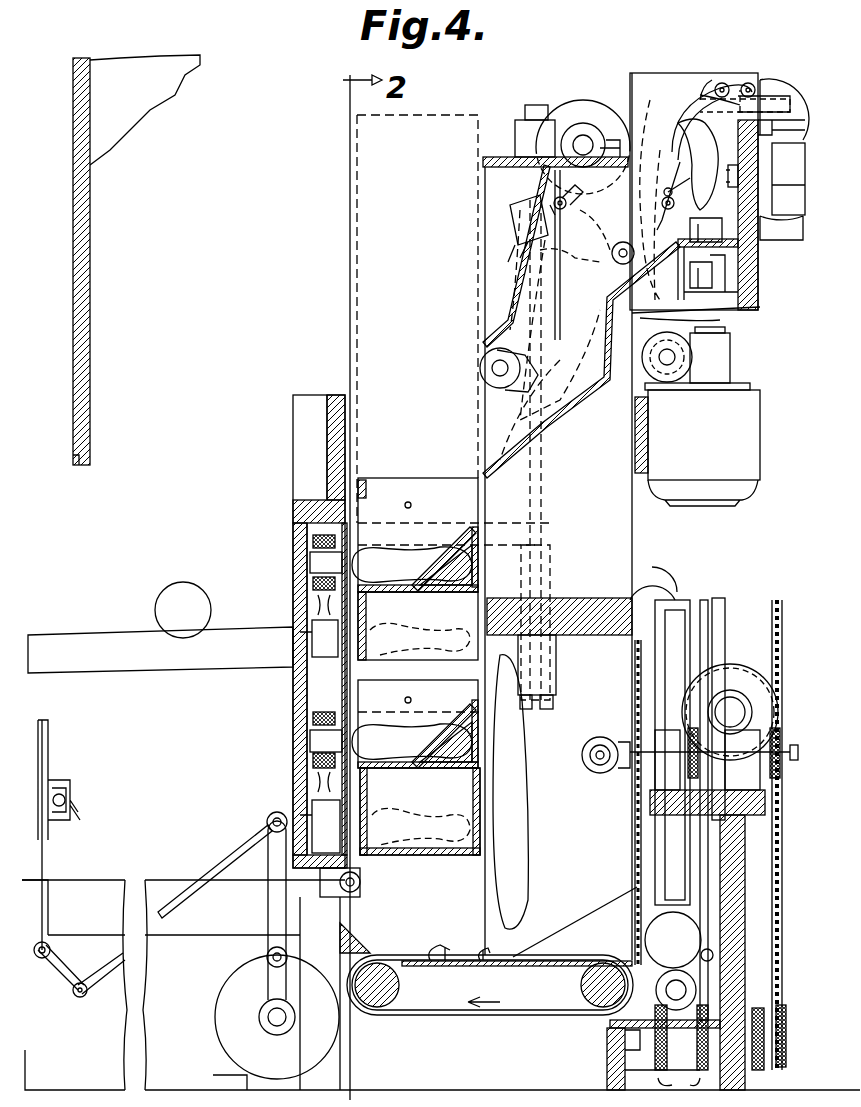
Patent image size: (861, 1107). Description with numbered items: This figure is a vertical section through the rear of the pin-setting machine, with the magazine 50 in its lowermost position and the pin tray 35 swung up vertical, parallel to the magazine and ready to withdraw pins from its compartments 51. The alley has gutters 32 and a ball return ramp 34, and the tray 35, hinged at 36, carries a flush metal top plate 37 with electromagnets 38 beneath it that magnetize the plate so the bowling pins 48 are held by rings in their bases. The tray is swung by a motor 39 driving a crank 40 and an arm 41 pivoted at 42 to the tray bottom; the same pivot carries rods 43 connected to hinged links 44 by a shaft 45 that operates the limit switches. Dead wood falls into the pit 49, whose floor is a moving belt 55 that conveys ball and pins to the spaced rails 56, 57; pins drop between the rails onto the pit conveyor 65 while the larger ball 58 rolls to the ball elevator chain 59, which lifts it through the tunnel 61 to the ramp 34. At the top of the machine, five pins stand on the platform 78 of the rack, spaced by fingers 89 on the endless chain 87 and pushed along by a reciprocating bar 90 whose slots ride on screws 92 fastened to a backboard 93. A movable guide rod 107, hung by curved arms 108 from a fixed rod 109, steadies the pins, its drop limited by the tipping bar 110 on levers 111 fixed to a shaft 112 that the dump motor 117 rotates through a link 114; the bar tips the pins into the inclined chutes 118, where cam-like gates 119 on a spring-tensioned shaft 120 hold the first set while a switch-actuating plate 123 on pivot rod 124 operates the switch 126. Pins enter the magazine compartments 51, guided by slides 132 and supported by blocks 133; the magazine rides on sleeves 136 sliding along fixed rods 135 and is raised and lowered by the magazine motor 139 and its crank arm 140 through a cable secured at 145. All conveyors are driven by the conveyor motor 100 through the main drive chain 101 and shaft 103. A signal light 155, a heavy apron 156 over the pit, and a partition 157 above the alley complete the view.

The gutters 32 is at (146, 878).
The ball return ramp 34 is at (82, 648).
The pin tray 35 is at (342, 462).
The hinge 36 is at (352, 892).
The top plate 37 is at (310, 608).
The electromagnets 38 is at (300, 720).
The motor 39 is at (230, 1012).
The crank 40 is at (292, 988).
The arm 41 is at (280, 912).
The pivot 42 is at (268, 818).
The rods 43 is at (212, 862).
The hinged links 44 is at (60, 968).
The shaft 45 is at (80, 997).
The bowling pins 48 is at (660, 996).
The pit 49 is at (490, 985).
The magazine 50 is at (438, 480).
The compartments 51 is at (440, 855).
The belt 55 is at (464, 976).
The rail 56 is at (600, 985).
The rail 57 is at (713, 952).
The ball 58 is at (655, 933).
The chain conveyor 59 is at (633, 688).
The tunnel 61 is at (682, 853).
The pit conveyor 65 is at (720, 1047).
The pin rack platform 78 is at (745, 272).
The endless chain 87 is at (772, 302).
The fingers 89 is at (672, 300).
The reciprocating bar 90 is at (735, 165).
The screws 92 is at (665, 190).
The backboard 93 is at (742, 168).
The conveyor motor 100 is at (750, 680).
The main drive chain 101 is at (726, 703).
The shaft 103 is at (660, 1057).
The movable guide rod 107 is at (665, 208).
The curved arms 108 is at (688, 105).
The fixed rod 109 is at (752, 84).
The pin-tipping bar 110 is at (668, 125).
The levers 111 is at (705, 100).
The shaft 112 is at (724, 84).
The link 114 is at (772, 98).
The dump motor 117 is at (790, 194).
The chutes 118 is at (603, 380).
The cam-like gates 119 is at (510, 385).
The shaft 120 is at (495, 362).
The switch-actuating plate 123 is at (605, 260).
The pivot rod 124 is at (592, 184).
The switch 126 is at (512, 228).
The slides 132 is at (462, 712).
The blocks 133 is at (460, 770).
The vertical rods 135 is at (545, 485).
The sleeves 136 is at (556, 652).
The magazine motor 139 is at (735, 432).
The crank arm 140 is at (720, 320).
The cable securing point 145 is at (572, 97).
The signal light 155 is at (70, 790).
The apron 156 is at (527, 795).
The partition 157 is at (92, 282).